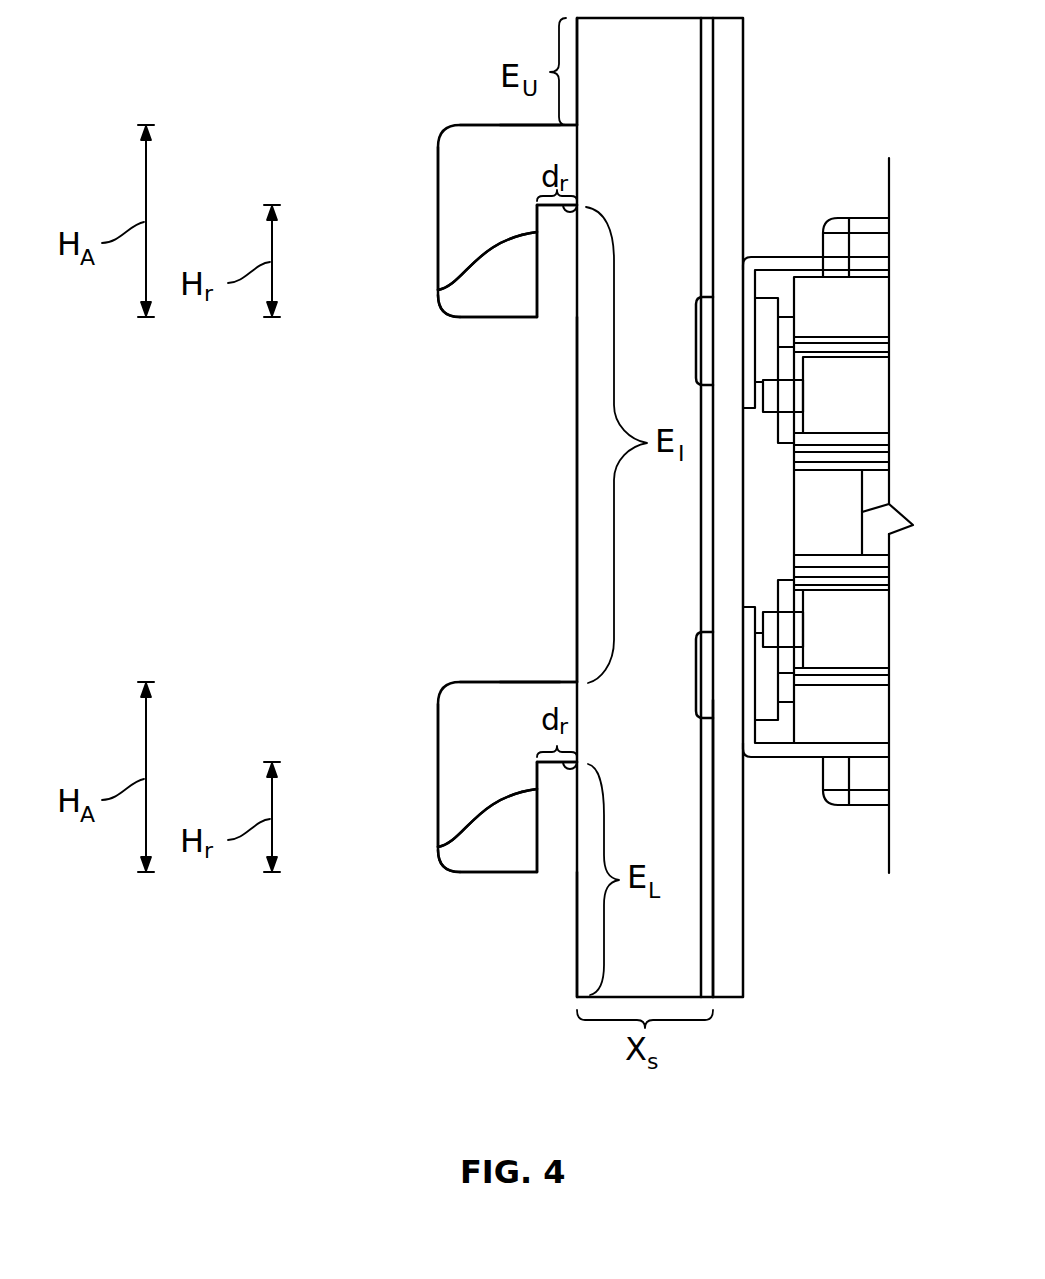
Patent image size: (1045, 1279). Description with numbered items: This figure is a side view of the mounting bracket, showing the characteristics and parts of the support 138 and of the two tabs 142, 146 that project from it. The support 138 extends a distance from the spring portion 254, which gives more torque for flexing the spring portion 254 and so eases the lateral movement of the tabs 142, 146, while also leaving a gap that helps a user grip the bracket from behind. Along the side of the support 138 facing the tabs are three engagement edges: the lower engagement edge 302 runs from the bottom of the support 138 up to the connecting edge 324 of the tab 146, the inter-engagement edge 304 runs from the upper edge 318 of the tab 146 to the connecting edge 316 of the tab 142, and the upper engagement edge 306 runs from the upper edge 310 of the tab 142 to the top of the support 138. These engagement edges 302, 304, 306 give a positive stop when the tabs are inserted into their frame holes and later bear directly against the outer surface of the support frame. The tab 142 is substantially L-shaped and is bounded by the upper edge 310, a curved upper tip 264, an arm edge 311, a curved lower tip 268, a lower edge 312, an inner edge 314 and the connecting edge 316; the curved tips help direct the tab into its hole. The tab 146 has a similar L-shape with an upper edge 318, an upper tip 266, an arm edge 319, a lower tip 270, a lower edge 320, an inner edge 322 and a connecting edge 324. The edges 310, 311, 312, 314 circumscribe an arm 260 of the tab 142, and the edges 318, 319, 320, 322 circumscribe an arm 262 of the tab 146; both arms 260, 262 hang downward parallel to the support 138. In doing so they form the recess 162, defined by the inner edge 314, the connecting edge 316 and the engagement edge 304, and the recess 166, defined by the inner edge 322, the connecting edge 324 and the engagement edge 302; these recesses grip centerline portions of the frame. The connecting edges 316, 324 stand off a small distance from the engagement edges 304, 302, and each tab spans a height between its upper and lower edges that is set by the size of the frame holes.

The support 138 is at (686, 256).
The tab 142 is at (396, 80).
The tab 146 is at (396, 626).
The recess 162 is at (559, 310).
The recess 166 is at (560, 862).
The spring portion 254 is at (705, 984).
The arm 260 is at (462, 213).
The arm 262 is at (462, 755).
The upper tip 264 is at (443, 132).
The upper tip 266 is at (441, 688).
The lower tip 268 is at (445, 307).
The lower tip 270 is at (445, 866).
The lower engagement edge 302 is at (577, 975).
The inter-engagement edge 304 is at (577, 443).
The upper engagement edge 306 is at (578, 70).
The upper edge 310 is at (520, 126).
The arm edge 311 is at (438, 205).
The lower edge 312 is at (487, 318).
The inner edge 314 is at (438, 291).
The connecting edge 316 is at (578, 207).
The upper edge 318 is at (519, 684).
The arm edge 319 is at (437, 737).
The lower edge 320 is at (487, 874).
The inner edge 322 is at (440, 846).
The connecting edge 324 is at (578, 765).